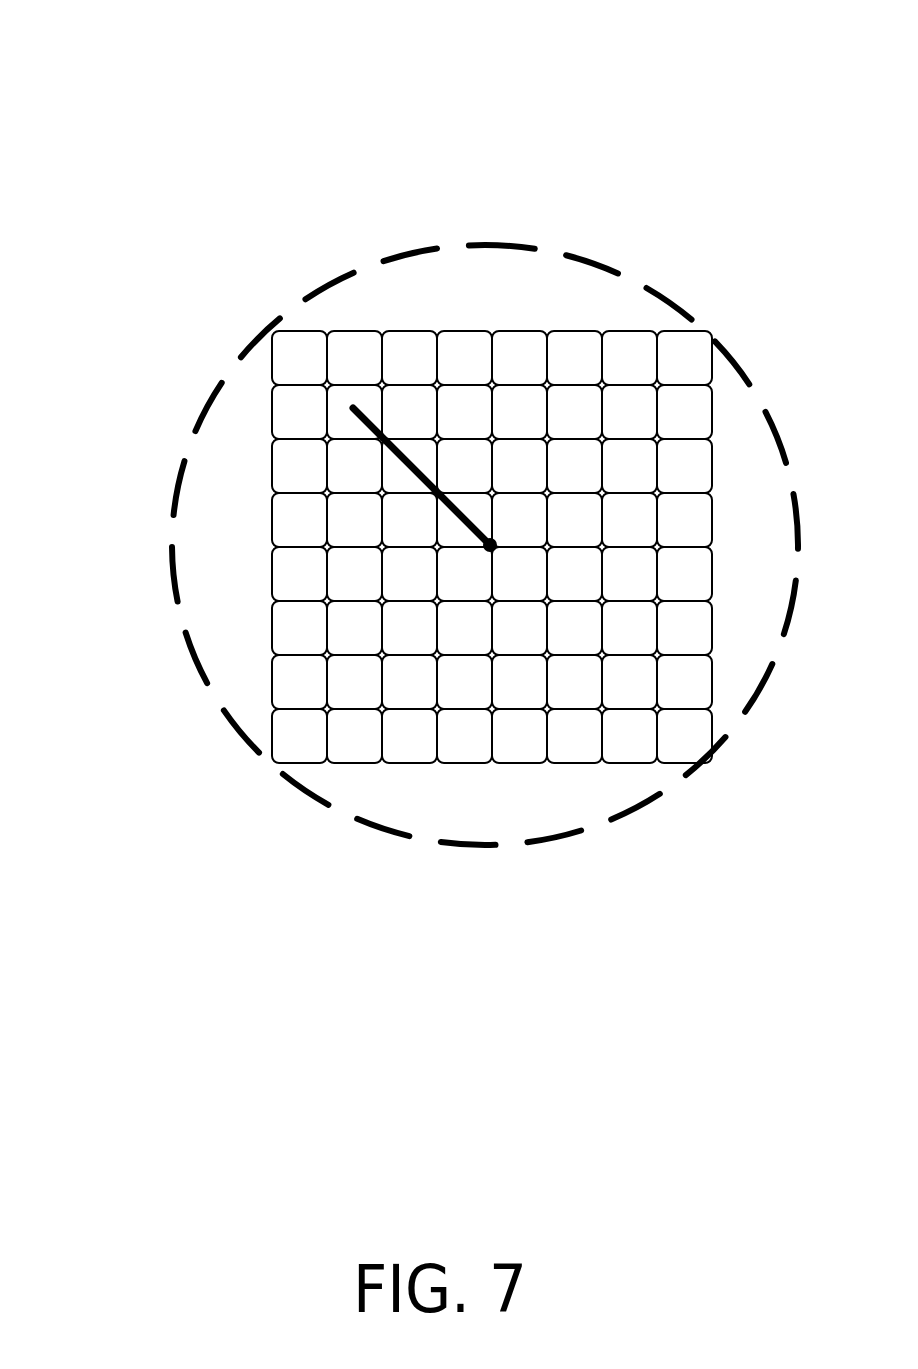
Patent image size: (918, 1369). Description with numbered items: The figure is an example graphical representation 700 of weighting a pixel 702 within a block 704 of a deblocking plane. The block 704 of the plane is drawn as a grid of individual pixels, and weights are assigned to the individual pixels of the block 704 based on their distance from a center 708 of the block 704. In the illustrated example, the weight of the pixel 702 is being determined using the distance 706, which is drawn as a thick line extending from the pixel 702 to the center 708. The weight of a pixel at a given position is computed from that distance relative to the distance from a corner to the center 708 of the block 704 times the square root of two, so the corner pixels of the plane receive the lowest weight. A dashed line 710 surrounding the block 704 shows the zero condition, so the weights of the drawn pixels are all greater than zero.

The graphical representation 700 is at (128, 36).
The pixel 702 is at (341, 393).
The block 704 is at (310, 886).
The distance 706 is at (390, 446).
The center 708 is at (490, 545).
The line 710 is at (426, 246).